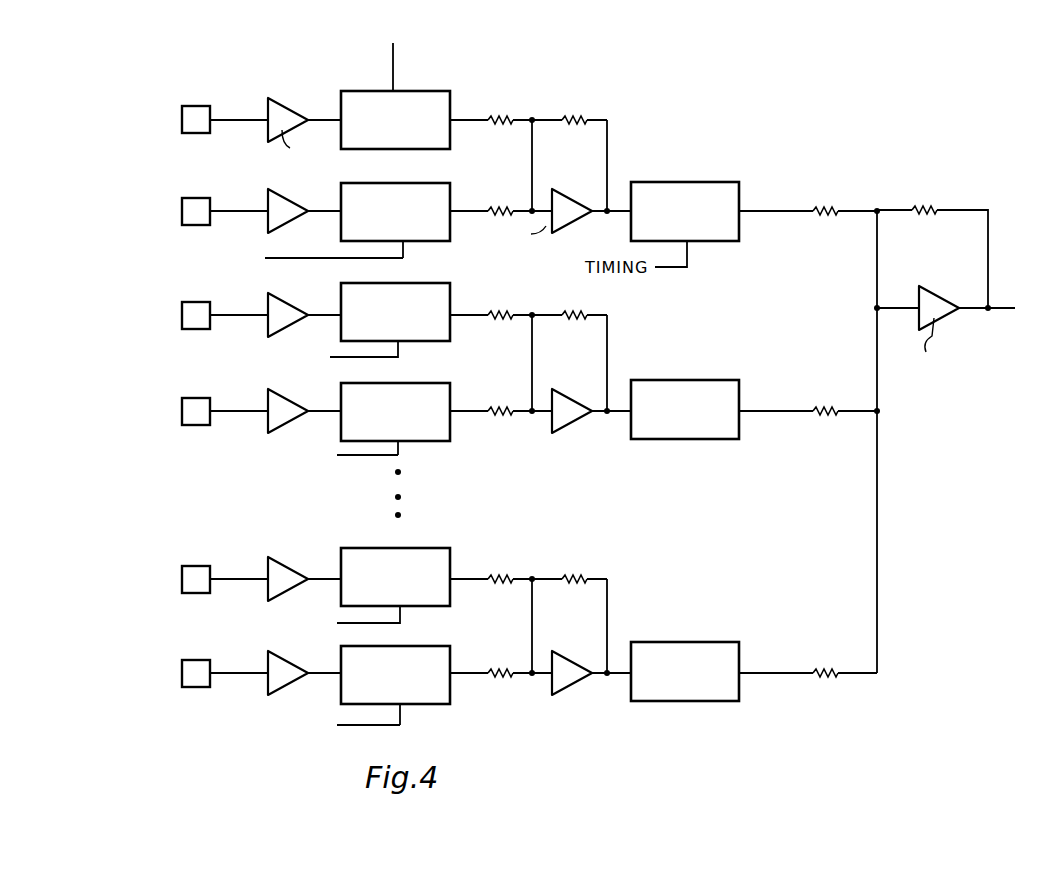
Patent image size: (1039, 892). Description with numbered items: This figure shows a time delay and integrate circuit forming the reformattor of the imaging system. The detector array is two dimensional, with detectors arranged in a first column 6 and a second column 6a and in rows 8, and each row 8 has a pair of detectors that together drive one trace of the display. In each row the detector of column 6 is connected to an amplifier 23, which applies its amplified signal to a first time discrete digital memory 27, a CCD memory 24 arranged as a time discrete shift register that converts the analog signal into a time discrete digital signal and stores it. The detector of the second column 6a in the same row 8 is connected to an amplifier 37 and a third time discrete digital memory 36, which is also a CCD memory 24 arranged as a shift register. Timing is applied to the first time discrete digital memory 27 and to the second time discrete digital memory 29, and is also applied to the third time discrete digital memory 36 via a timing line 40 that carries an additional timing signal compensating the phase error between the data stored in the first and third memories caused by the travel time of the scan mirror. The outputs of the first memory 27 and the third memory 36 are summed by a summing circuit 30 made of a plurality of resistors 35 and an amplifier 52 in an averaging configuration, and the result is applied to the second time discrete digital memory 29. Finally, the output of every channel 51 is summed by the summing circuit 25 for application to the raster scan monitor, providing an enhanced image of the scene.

The column of detectors 6 is at (198, 89).
The row 8 is at (192, 142).
The second column of detectors 6a is at (202, 194).
The channel 51 is at (250, 85).
The amplifier 23 is at (286, 108).
The amplifier 37 is at (301, 205).
The CCD memory 24 is at (362, 100).
The first time discrete digital memory 27 is at (418, 95).
The third time discrete digital memory 36 is at (428, 244).
The timing line 40 is at (332, 260).
The resistors 35 is at (497, 115).
The summing circuit 30 is at (572, 113).
The amplifier 52 is at (572, 228).
The second time discrete digital memory 29 is at (723, 241).
The summing circuit 25 is at (858, 198).